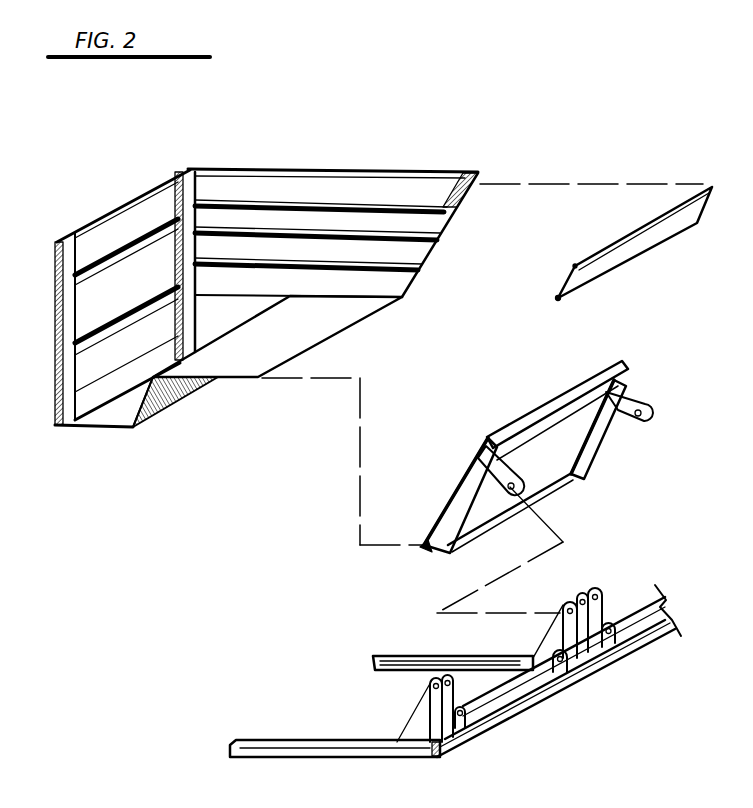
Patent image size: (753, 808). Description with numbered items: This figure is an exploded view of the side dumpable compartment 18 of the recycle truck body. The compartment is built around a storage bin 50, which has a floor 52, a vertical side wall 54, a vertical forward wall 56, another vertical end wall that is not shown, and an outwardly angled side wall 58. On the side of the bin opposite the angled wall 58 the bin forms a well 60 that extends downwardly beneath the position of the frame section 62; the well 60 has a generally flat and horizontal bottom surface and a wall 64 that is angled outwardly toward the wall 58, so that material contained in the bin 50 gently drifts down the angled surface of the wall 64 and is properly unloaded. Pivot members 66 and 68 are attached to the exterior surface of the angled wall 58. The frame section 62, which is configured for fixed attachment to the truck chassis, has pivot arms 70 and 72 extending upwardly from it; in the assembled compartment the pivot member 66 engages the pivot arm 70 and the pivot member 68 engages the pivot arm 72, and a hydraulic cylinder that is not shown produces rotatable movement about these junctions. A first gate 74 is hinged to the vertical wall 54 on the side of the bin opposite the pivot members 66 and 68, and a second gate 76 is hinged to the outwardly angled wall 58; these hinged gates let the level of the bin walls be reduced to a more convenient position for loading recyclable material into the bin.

The side dumpable compartment 18 is at (392, 152).
The storage bin 50 is at (260, 220).
The floor 52 is at (312, 332).
The vertical side wall 54 is at (100, 308).
The vertical forward wall 56 is at (292, 188).
The outwardly angled side wall 58 is at (545, 432).
The well 60 is at (107, 408).
The frame section 62 is at (333, 752).
The well wall 64 is at (160, 398).
The pivot member 66 is at (650, 412).
The pivot member 68 is at (508, 482).
The pivot arm 70 is at (597, 593).
The pivot arm 72 is at (428, 718).
The first gate 74 is at (128, 237).
The second gate 76 is at (627, 248).